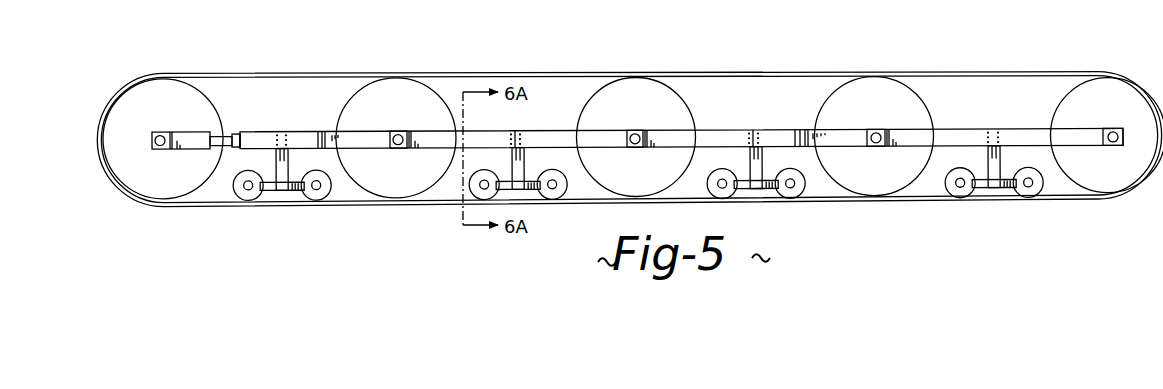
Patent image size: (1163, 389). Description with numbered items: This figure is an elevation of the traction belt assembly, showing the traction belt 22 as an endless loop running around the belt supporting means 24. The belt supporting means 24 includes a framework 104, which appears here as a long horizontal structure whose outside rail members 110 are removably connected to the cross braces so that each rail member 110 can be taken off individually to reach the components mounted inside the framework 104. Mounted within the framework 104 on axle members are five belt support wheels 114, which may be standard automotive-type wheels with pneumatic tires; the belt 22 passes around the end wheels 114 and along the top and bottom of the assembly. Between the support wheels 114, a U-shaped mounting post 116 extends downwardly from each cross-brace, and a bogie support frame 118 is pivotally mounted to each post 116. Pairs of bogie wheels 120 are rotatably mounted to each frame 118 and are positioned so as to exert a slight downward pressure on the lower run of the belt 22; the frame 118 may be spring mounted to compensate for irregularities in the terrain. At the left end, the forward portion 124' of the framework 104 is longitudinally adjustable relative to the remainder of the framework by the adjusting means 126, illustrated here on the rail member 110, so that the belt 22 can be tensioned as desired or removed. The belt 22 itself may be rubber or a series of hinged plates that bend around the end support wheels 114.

The traction belt 22 is at (1055, 73).
The belt supporting means 24 is at (946, 126).
The framework 104 is at (308, 129).
The outside rail members 110 is at (258, 138).
The belt support wheel 114 is at (182, 95).
The U-shaped mounting post 116 is at (276, 160).
The bogie support frame 118 is at (273, 191).
The bogie wheels 120 is at (320, 198).
The forward portion of the framework 124' is at (174, 184).
The adjusting means 126 is at (231, 132).